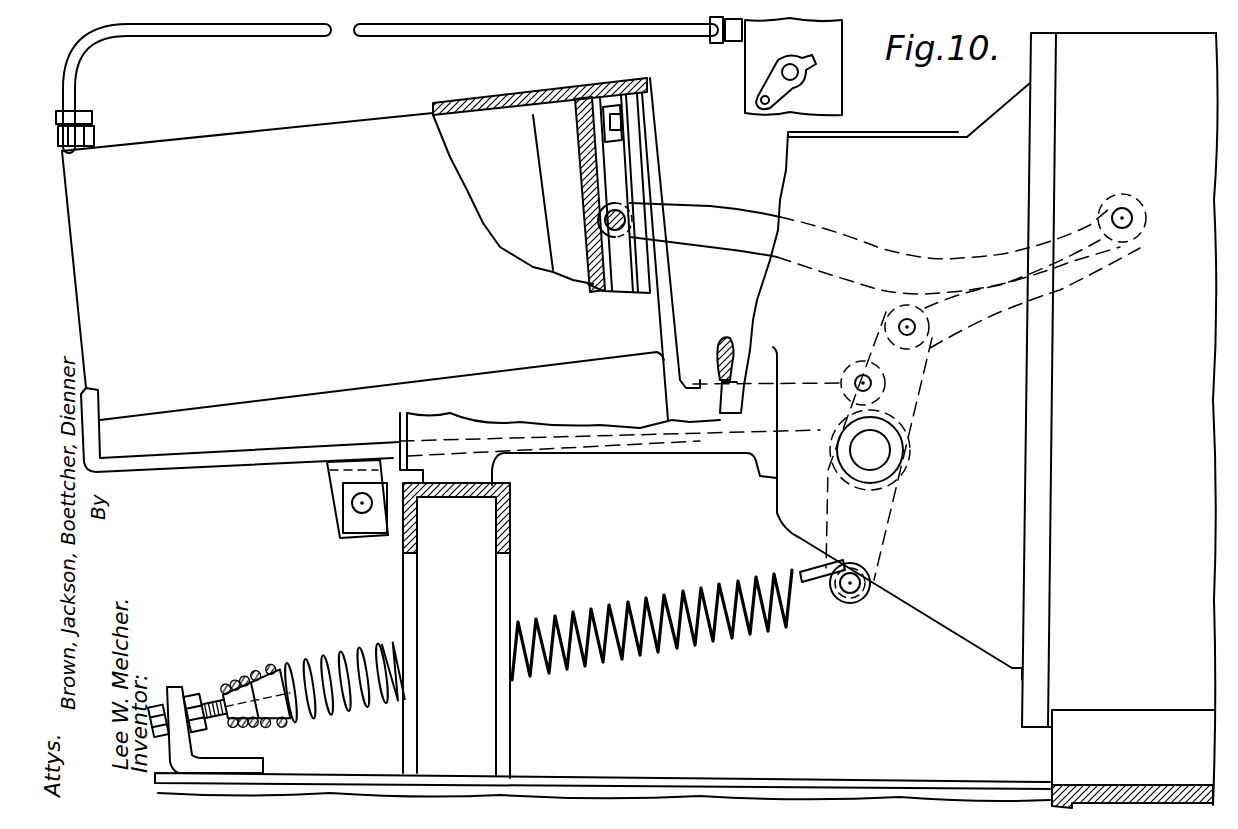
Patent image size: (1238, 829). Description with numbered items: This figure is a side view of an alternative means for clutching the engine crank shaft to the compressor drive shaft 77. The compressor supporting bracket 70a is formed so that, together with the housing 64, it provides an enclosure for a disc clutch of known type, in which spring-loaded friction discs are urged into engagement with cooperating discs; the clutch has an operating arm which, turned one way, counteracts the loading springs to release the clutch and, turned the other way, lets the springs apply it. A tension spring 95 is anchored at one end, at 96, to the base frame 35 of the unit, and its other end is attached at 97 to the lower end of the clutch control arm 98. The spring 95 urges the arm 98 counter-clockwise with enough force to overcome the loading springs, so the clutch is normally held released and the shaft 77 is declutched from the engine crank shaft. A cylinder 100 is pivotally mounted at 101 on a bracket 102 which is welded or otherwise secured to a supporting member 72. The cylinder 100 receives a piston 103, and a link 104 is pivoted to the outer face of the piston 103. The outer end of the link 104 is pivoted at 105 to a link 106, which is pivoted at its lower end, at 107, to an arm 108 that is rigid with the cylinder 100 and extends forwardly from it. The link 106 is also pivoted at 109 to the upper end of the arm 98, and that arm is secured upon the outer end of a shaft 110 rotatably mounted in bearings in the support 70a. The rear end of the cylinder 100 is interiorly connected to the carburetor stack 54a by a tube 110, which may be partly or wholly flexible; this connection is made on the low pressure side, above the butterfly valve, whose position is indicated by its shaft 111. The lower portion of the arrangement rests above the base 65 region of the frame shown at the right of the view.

The tube 110 is at (215, 36).
The cylinder 100 is at (333, 137).
The piston 103 is at (585, 173).
The shaft 111 is at (770, 72).
The carburetor stack 54a is at (843, 100).
The compressor supporting bracket 70a is at (985, 650).
The housing 64 is at (1055, 700).
The base 65 is at (1067, 792).
The base frame 35 is at (668, 777).
The supporting member 72 is at (510, 528).
The pivot 101 is at (355, 506).
The bracket 102 is at (377, 527).
The link 104 is at (712, 215).
The pivot 105 is at (1127, 212).
The link 106 is at (992, 303).
The pivot 107 is at (852, 378).
The arm 108 is at (702, 388).
The pivot 109 is at (885, 322).
The shaft 77 is at (730, 403).
The tension spring 95 is at (657, 600).
The anchor 96 is at (182, 686).
The attachment point 97 is at (848, 592).
The clutch control arm 98 is at (862, 600).